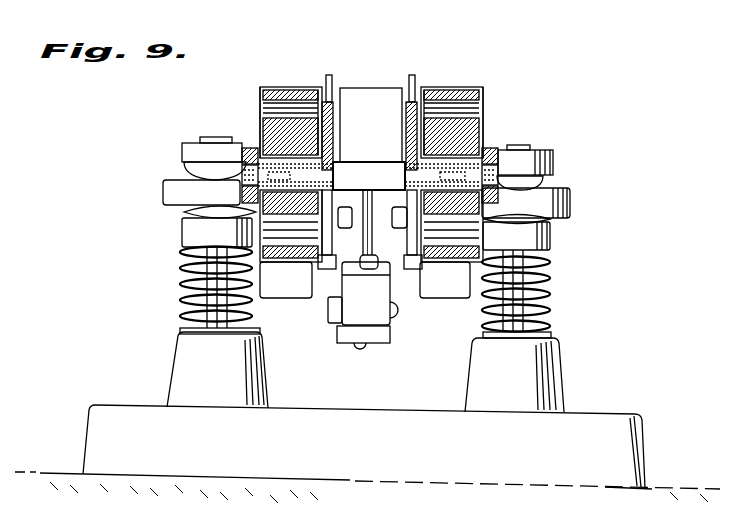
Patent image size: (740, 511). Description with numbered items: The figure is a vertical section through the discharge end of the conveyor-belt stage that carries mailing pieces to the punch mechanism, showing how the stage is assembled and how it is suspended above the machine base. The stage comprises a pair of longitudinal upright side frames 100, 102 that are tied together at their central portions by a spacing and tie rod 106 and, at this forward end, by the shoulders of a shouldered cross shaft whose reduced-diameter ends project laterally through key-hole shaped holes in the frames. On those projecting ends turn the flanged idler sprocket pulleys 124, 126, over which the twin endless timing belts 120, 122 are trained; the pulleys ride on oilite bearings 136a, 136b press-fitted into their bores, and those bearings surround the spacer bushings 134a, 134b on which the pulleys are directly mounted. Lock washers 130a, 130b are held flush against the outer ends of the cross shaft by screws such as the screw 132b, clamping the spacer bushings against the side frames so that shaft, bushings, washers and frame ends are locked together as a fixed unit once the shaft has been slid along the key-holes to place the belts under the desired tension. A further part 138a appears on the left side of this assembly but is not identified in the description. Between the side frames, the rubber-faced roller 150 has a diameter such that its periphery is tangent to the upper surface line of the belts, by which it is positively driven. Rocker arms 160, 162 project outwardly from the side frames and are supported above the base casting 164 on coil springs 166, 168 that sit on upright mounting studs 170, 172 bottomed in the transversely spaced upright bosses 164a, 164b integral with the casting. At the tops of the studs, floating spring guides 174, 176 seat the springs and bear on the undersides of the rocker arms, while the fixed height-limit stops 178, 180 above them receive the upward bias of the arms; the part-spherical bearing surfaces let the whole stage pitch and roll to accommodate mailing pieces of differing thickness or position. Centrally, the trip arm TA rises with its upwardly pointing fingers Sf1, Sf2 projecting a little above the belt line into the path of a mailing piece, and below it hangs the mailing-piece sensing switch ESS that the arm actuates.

The side frame 100 is at (337, 110).
The side frame 102 is at (396, 105).
The spacing and tie rod 106 is at (369, 176).
The timing belt 120 is at (283, 87).
The timing belt 122 is at (457, 92).
The flanged idler sprocket pulley 124 is at (258, 118).
The flanged idler sprocket pulley 126 is at (485, 138).
The lock washer 130a is at (245, 166).
The lock washer 130b is at (500, 150).
The screw 132b is at (546, 182).
The spacer bushing 134a is at (190, 215).
The spacer bushing 134b is at (552, 218).
The oilite bearing 136a is at (248, 150).
The oilite bearing 136b is at (490, 148).
The washer 138a is at (181, 164).
The rubber-faced roller 150 is at (371, 125).
The rocker arm 160 is at (173, 198).
The rocker arm 162 is at (571, 206).
The base casting 164 is at (367, 454).
The upright boss 164a is at (187, 382).
The upright boss 164b is at (541, 380).
The coil spring 166 is at (190, 290).
The coil spring 168 is at (552, 313).
The upright mounting stud 170 is at (185, 311).
The upright mounting stud 172 is at (548, 337).
The floating spring guide 174 is at (200, 233).
The floating spring guide 176 is at (552, 249).
The height-limit stop 178 is at (183, 150).
The height-limit stop 180 is at (556, 158).
The upwardly pointing finger Sf1 is at (328, 77).
The upwardly pointing finger Sf2 is at (413, 77).
The trip arm TA is at (360, 237).
The mailing-piece sensing switch ESS is at (355, 322).